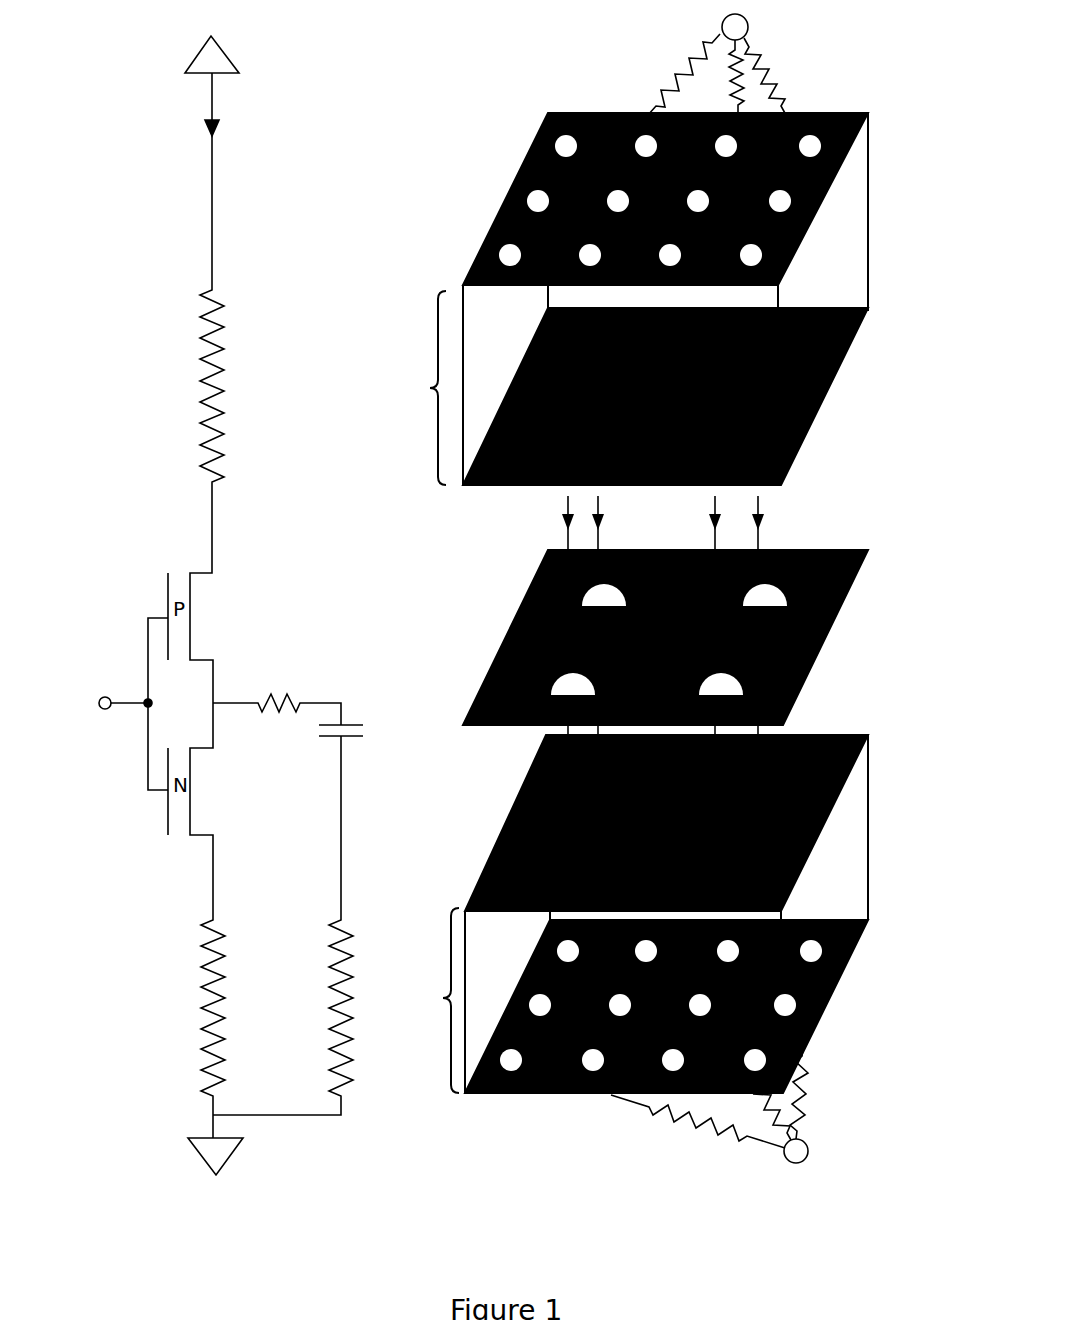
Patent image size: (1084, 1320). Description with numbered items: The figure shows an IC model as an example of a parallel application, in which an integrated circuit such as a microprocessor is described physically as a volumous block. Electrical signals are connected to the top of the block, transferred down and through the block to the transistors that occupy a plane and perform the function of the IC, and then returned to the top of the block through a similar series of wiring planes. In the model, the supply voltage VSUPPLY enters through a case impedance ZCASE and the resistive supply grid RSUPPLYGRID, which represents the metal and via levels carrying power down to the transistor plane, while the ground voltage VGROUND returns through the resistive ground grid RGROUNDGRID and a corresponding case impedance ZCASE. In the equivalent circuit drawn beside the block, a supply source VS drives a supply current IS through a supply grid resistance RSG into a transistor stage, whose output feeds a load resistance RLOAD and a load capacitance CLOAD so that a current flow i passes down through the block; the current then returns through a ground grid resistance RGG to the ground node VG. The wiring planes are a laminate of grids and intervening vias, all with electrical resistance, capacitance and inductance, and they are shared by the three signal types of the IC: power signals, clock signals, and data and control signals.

The supply voltage source VS is at (192, 52).
The supply current IS is at (175, 179).
The supply grid resistance RSG is at (172, 386).
The resistive supply grid RSUPPLYGRID is at (388, 383).
The load resistance RLOAD is at (220, 507).
The load capacitance CLOAD is at (290, 718).
The ground grid resistance RGG is at (239, 1027).
The resistive ground grid RGROUNDGRID is at (410, 996).
The ground voltage VG is at (187, 1156).
The supply voltage VSUPPLY is at (234, 36).
The ground voltage VGROUND is at (244, 1142).
The case impedance ZCASE is at (738, 588).
The current flow i is at (495, 640).